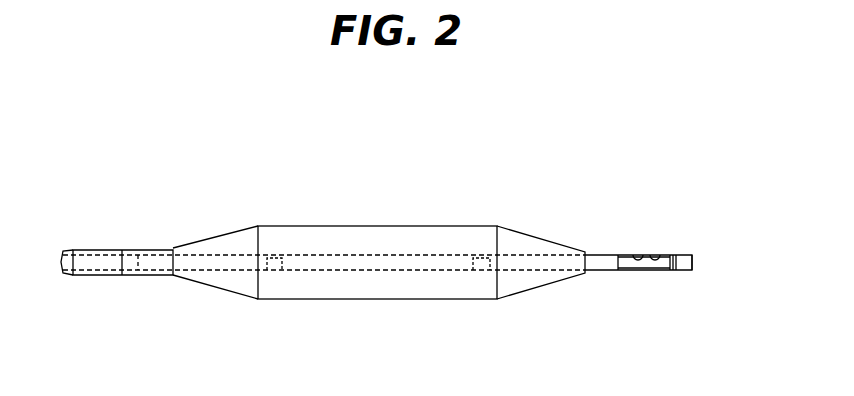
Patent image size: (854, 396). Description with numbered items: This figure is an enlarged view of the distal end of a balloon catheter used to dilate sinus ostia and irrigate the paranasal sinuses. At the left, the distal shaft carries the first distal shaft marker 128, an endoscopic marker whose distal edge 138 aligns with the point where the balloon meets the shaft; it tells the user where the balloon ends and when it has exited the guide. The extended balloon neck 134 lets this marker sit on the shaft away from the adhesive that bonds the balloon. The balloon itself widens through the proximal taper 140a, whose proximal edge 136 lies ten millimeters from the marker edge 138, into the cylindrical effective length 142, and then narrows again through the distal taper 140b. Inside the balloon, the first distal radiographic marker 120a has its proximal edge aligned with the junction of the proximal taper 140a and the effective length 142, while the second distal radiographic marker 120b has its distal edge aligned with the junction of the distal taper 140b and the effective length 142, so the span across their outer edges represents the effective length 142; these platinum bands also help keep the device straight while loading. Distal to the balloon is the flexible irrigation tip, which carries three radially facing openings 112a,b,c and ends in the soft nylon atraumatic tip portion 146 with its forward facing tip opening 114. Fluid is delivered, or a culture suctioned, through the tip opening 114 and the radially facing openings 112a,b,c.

The radially facing openings 112a,b,c is at (659, 248).
The tip opening 114 is at (705, 270).
The first distal radiographic marker 120a is at (279, 256).
The second distal radiographic marker 120b is at (483, 256).
The first distal shaft marker 128 is at (92, 277).
The extended balloon neck 134 is at (157, 277).
The proximal edge of proximal balloon taper 136 is at (172, 277).
The distal edge of first endoscopic marker 138 is at (122, 249).
The proximal taper 140a is at (205, 239).
The distal taper 140b is at (540, 230).
The effective length 142 is at (498, 305).
The atraumatic tip portion 146 is at (682, 282).